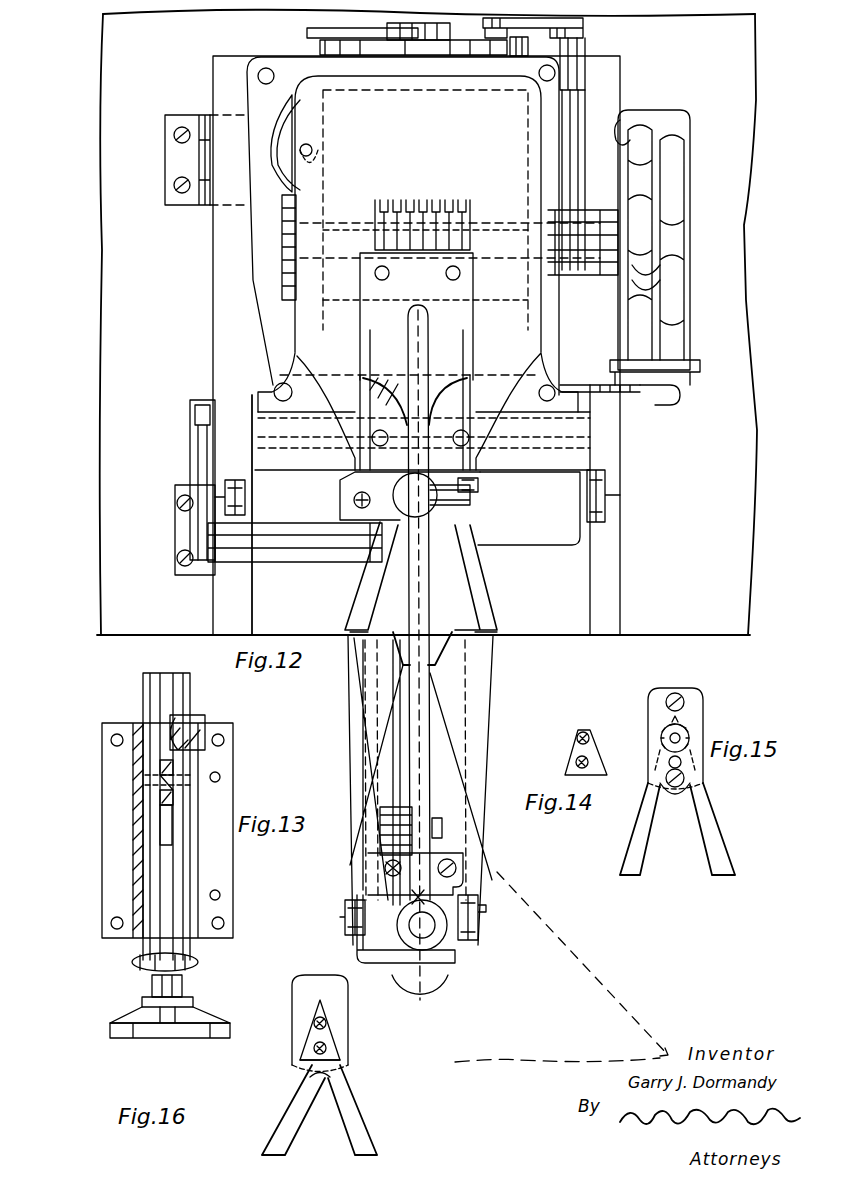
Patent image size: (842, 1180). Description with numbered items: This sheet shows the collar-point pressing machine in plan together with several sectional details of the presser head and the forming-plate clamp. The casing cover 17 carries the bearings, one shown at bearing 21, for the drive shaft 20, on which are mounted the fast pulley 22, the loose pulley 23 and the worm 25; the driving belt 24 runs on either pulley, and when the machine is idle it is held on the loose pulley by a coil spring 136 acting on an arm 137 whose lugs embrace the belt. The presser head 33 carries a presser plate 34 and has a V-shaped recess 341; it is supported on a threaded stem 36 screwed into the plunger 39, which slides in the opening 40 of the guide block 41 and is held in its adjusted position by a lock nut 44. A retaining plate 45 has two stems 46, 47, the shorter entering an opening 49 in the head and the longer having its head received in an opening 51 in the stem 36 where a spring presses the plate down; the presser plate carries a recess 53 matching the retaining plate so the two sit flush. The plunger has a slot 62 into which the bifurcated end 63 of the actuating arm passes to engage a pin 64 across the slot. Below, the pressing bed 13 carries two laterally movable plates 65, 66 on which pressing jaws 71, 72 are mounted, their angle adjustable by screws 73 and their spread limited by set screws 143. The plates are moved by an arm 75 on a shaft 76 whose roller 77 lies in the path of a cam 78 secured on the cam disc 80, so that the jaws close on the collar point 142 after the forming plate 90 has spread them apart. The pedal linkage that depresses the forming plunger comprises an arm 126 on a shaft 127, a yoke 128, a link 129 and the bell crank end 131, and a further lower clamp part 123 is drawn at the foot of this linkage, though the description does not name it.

In FIG. 12, the pressing bed 13 is at (321, 484).
In FIG. 12, the cover 17 is at (325, 303).
In FIG. 12, the drive shaft 20 is at (478, 230).
In FIG. 12, the bearing 21 is at (575, 230).
In FIG. 12, the pulley 22 is at (672, 205).
In FIG. 12, the loose pulley 23 is at (618, 138).
In FIG. 12, the belt 24 is at (650, 272).
In FIG. 12, the worm 25 is at (428, 200).
In FIG. 13, the presser head 33 is at (142, 1002).
In FIG. 15, the presser head 33 is at (695, 702).
In FIG. 16, the presser head 33 is at (335, 1018).
In FIG. 13, the presser plate 34 is at (130, 1016).
In FIG. 15, the presser plate 34 is at (690, 800).
In FIG. 16, the presser plate 34 is at (335, 1092).
In FIG. 13, the V-shaped recess 341 is at (150, 1035).
In FIG. 15, the V-shaped recess 341 is at (668, 845).
In FIG. 16, the V-shaped recess 341 is at (312, 1125).
In FIG. 15, the stem 36 is at (688, 732).
In FIG. 13, the plunger 39 is at (150, 865).
In FIG. 13, the opening 40 is at (140, 816).
In FIG. 12, the guide block 41 is at (355, 480).
In FIG. 13, the lock nut 44 is at (132, 962).
In FIG. 14, the retaining plate 45 is at (576, 748).
In FIG. 14, the stem 46 is at (578, 735).
In FIG. 16, the stem 46 is at (327, 1030).
In FIG. 14, the stem 47 is at (576, 762).
In FIG. 16, the stem 47 is at (327, 1050).
In FIG. 15, the opening 49 is at (668, 760).
In FIG. 15, the opening 51 is at (688, 740).
In FIG. 16, the recess 53 is at (345, 1048).
In FIG. 13, the slot 62 is at (165, 825).
In FIG. 13, the bifurcated end 63 is at (175, 780).
In FIG. 13, the pin 64 is at (160, 770).
In FIG. 12, the plate 65 is at (270, 460).
In FIG. 12, the plate 66 is at (518, 547).
In FIG. 12, the pressing jaw 71 is at (355, 510).
In FIG. 12, the pressing jaw 72 is at (450, 515).
In FIG. 12, the screws 73 is at (478, 500).
In FIG. 12, the arm 75 is at (570, 22).
In FIG. 12, the shaft 76 is at (575, 47).
In FIG. 12, the roller 77 is at (483, 30).
In FIG. 12, the cam 78 is at (307, 33).
In FIG. 12, the cam disc 80 is at (380, 56).
In FIG. 12, the forming plate 90 is at (470, 840).
In FIG. 12, the lower clamp ring 123 is at (392, 975).
In FIG. 12, the arm 126 is at (200, 457).
In FIG. 12, the shaft 127 is at (185, 560).
In FIG. 12, the yoke 128 is at (378, 560).
In FIG. 12, the link 129 is at (392, 781).
In FIG. 12, the bell crank end 131 is at (386, 876).
In FIG. 12, the coil spring 136 is at (630, 393).
In FIG. 12, the arm 137 is at (700, 366).
In FIG. 12, the collar point 142 is at (515, 868).
In FIG. 12, the set screws 143 is at (215, 498).